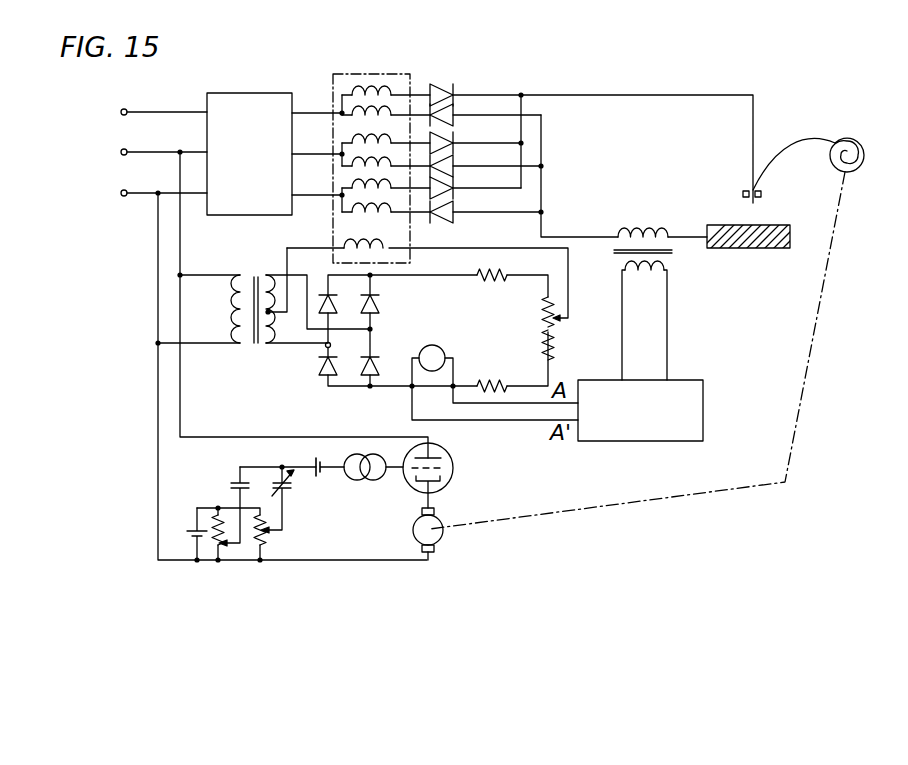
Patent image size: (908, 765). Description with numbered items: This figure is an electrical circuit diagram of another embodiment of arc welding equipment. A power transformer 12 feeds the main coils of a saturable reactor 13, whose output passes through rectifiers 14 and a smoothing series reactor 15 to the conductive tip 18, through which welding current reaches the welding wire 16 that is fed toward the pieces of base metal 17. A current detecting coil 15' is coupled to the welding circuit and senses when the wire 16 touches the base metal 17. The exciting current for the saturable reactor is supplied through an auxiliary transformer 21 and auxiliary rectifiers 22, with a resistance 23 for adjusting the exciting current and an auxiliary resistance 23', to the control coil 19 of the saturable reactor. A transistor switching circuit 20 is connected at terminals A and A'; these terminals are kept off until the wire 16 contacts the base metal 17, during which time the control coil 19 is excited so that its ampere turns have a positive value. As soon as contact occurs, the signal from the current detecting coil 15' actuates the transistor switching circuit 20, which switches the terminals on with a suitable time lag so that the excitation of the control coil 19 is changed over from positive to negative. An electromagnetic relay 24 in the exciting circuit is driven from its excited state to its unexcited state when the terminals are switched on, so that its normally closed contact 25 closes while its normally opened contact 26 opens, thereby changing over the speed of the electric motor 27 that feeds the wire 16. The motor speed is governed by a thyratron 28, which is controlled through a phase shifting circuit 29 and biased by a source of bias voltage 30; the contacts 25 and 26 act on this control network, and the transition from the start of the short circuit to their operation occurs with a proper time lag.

The power transformer 12 is at (255, 100).
The main coils of a saturable reactor 13 is at (367, 86).
The rectifiers 14 is at (445, 90).
The smoothing series reactor 15 is at (660, 225).
The current detecting coil 15' is at (666, 316).
The welding wire 16 is at (850, 138).
The pieces of a base metal 17 is at (770, 225).
The conductive tip 18 is at (745, 190).
The control coil of the saturable reactor 19 is at (390, 248).
The transistor switching circuit 20 is at (681, 390).
The auxiliary transformer 21 is at (248, 348).
The auxiliary rectifiers 22 is at (374, 297).
The resistance for adjusting the exciting current 23 is at (515, 344).
The auxiliary resistance 23' is at (505, 289).
The electromagnetic relay 24 is at (439, 348).
The normally closed contact 25 is at (285, 492).
The normally opened contact 26 is at (235, 479).
The electric motor 27 is at (438, 516).
The thyratron 28 is at (446, 462).
The phase shifting circuit 29 is at (376, 480).
The source of bias voltage 30 is at (189, 546).